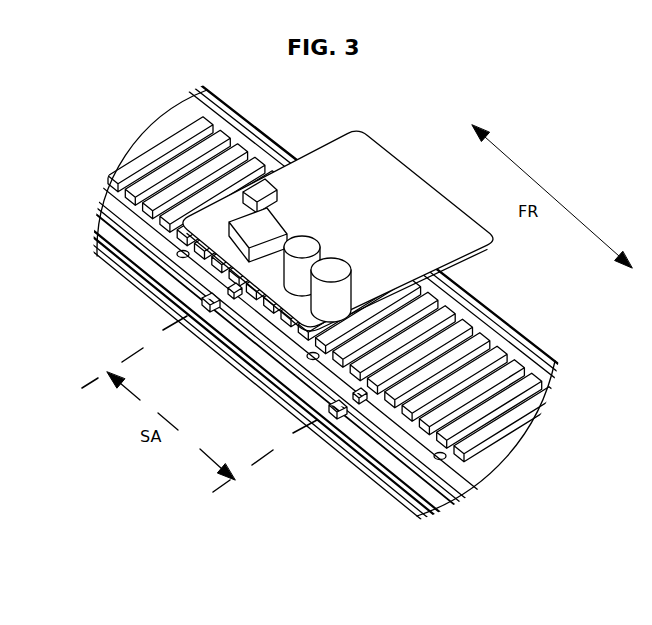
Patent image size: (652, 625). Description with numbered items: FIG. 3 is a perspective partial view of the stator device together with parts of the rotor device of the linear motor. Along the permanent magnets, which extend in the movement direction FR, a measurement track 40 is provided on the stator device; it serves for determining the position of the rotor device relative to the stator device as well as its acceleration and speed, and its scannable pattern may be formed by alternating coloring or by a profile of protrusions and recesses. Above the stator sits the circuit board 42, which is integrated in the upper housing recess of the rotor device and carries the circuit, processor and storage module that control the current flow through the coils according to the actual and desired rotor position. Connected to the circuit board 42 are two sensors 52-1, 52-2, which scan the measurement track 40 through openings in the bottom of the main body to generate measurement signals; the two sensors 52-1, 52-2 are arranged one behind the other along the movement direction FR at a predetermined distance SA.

The measurement track 40 is at (450, 477).
The circuit board 42 is at (377, 203).
The sensor 52-1 is at (236, 290).
The sensor 52-2 is at (360, 398).